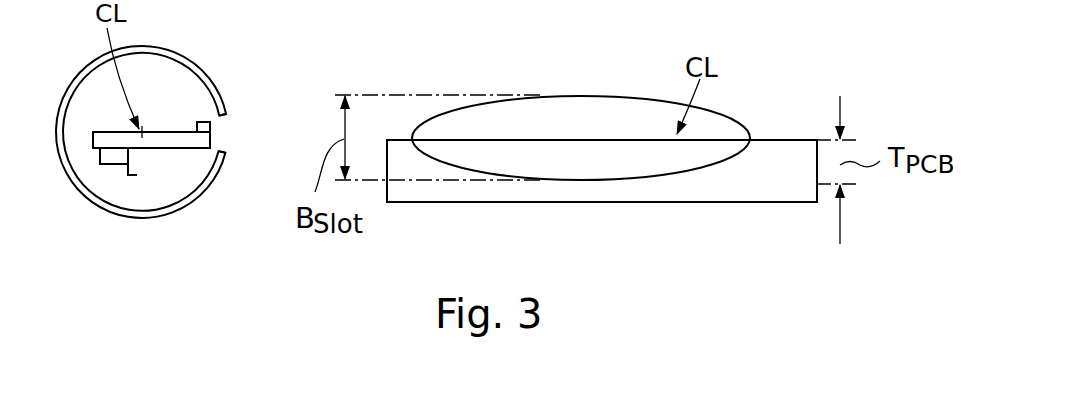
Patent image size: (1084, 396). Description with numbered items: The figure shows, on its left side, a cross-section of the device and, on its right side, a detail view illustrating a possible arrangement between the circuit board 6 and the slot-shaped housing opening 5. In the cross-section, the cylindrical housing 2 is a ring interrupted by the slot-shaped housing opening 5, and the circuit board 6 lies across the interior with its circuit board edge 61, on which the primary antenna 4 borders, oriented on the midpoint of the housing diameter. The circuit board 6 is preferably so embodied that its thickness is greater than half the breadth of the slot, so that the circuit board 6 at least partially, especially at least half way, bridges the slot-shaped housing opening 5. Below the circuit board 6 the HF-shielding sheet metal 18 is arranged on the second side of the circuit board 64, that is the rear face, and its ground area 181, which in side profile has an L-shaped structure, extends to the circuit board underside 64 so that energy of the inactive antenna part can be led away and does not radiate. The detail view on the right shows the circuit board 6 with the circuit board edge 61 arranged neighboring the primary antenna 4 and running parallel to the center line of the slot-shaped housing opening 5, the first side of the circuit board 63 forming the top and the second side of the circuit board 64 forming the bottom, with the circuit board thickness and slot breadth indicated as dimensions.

The cylindrical housing 2 is at (192, 68).
The primary antenna 4 is at (206, 114).
The slot-shaped housing opening 5 is at (244, 159).
The circuit board 6 is at (175, 142).
The HF-shielding sheet metal 18 is at (110, 170).
The ground area 181 is at (130, 178).
The circuit board edge 61 is at (220, 135).
The first side of the circuit board 63 is at (771, 134).
The second side of the circuit board 64 is at (727, 211).